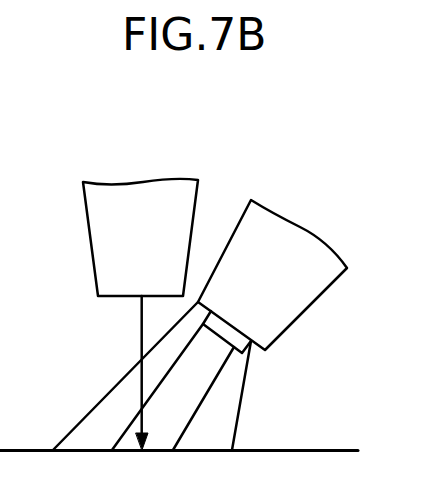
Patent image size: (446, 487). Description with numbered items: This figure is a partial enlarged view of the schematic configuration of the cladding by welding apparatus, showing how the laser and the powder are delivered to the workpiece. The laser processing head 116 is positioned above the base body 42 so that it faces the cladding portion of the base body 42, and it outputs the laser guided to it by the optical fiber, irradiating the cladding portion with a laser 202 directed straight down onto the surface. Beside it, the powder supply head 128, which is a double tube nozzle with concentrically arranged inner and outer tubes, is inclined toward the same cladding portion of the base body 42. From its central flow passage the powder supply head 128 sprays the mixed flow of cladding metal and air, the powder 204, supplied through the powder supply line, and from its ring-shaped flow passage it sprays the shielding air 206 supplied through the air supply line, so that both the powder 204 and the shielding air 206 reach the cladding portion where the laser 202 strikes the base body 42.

The base body 42 is at (338, 450).
The laser processing head 116 is at (134, 193).
The powder supply head 128 is at (288, 255).
The laser 202 is at (140, 322).
The mixed flow (powder) of cladding metal and air 204 is at (224, 366).
The shielding air 206 is at (242, 403).